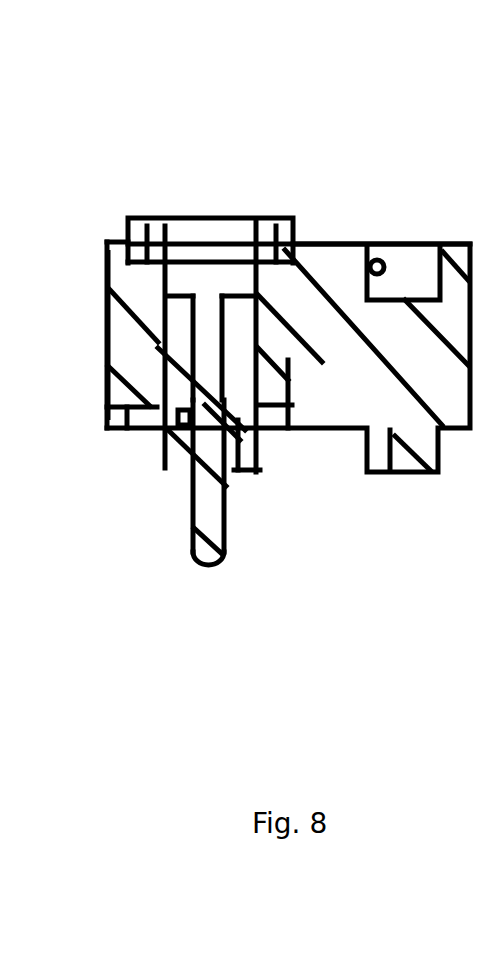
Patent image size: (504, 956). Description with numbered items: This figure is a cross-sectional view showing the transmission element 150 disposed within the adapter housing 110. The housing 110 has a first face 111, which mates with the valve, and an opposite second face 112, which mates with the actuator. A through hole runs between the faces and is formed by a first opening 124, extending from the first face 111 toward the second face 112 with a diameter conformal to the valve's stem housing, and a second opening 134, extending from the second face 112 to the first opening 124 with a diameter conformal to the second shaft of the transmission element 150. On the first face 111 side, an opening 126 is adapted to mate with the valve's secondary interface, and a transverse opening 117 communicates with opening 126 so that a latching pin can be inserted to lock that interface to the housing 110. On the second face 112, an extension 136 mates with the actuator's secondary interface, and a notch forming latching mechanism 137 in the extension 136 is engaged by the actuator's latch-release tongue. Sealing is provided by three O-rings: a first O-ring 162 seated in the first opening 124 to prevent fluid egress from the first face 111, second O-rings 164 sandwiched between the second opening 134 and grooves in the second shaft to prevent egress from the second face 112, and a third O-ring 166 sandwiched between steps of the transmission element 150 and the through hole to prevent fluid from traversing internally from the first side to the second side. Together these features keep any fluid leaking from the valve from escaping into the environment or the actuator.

The adapter housing 110 is at (322, 263).
The first face 111 is at (233, 158).
The second face 112 is at (328, 528).
The opening 117 is at (371, 256).
The first opening 124 is at (203, 286).
The opening 126 is at (402, 246).
The second opening 134 is at (247, 472).
The extension 136 is at (432, 478).
The latching mechanism 137 is at (373, 449).
The transmission element 150 is at (213, 425).
The first O-ring 162 is at (135, 220).
The second O-ring 164 is at (160, 473).
The third O-ring 166 is at (153, 386).